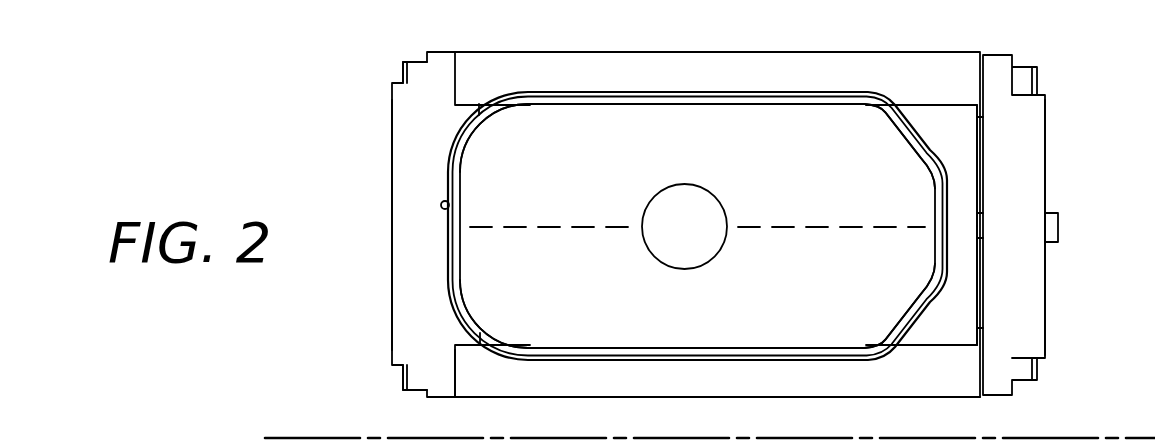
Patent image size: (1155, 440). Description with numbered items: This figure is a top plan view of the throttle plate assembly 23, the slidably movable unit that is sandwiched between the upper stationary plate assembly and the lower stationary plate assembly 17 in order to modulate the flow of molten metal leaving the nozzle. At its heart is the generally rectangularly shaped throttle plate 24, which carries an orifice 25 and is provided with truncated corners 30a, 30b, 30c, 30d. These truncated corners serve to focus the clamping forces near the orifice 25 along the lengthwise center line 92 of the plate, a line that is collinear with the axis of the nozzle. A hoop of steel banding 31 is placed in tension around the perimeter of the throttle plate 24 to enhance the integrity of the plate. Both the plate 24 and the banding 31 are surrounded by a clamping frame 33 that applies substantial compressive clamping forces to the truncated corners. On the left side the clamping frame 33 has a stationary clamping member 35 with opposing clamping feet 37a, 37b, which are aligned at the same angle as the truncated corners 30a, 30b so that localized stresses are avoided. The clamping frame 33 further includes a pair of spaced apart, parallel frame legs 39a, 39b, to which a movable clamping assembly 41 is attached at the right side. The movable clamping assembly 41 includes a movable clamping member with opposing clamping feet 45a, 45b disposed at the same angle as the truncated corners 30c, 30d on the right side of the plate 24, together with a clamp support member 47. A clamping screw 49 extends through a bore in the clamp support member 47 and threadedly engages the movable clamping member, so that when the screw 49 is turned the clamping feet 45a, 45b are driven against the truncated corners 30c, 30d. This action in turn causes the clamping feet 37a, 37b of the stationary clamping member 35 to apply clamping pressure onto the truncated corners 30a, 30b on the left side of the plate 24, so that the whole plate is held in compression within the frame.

The lower stationary plate assembly 17 is at (257, 430).
The throttle plate assembly 23 is at (381, 96).
The throttle plate 24 is at (706, 151).
The orifice 25 is at (724, 212).
The truncated corner 30a is at (482, 112).
The truncated corner 30b is at (480, 328).
The truncated corner 30c is at (921, 150).
The truncated corner 30d is at (908, 325).
The steel banding 31 is at (877, 94).
The clamping frame 33 is at (448, 403).
The stationary clamping member 35 is at (413, 252).
The clamping foot 37a is at (476, 126).
The clamping foot 37b is at (472, 322).
The frame leg 39a is at (668, 80).
The frame leg 39b is at (782, 375).
The movable clamping assembly 41 is at (957, 183).
The clamping foot 45a is at (928, 140).
The clamping foot 45b is at (927, 315).
The clamp support member 47 is at (1020, 312).
The clamping screw 49 is at (1053, 228).
The lengthwise center line 92 is at (542, 227).